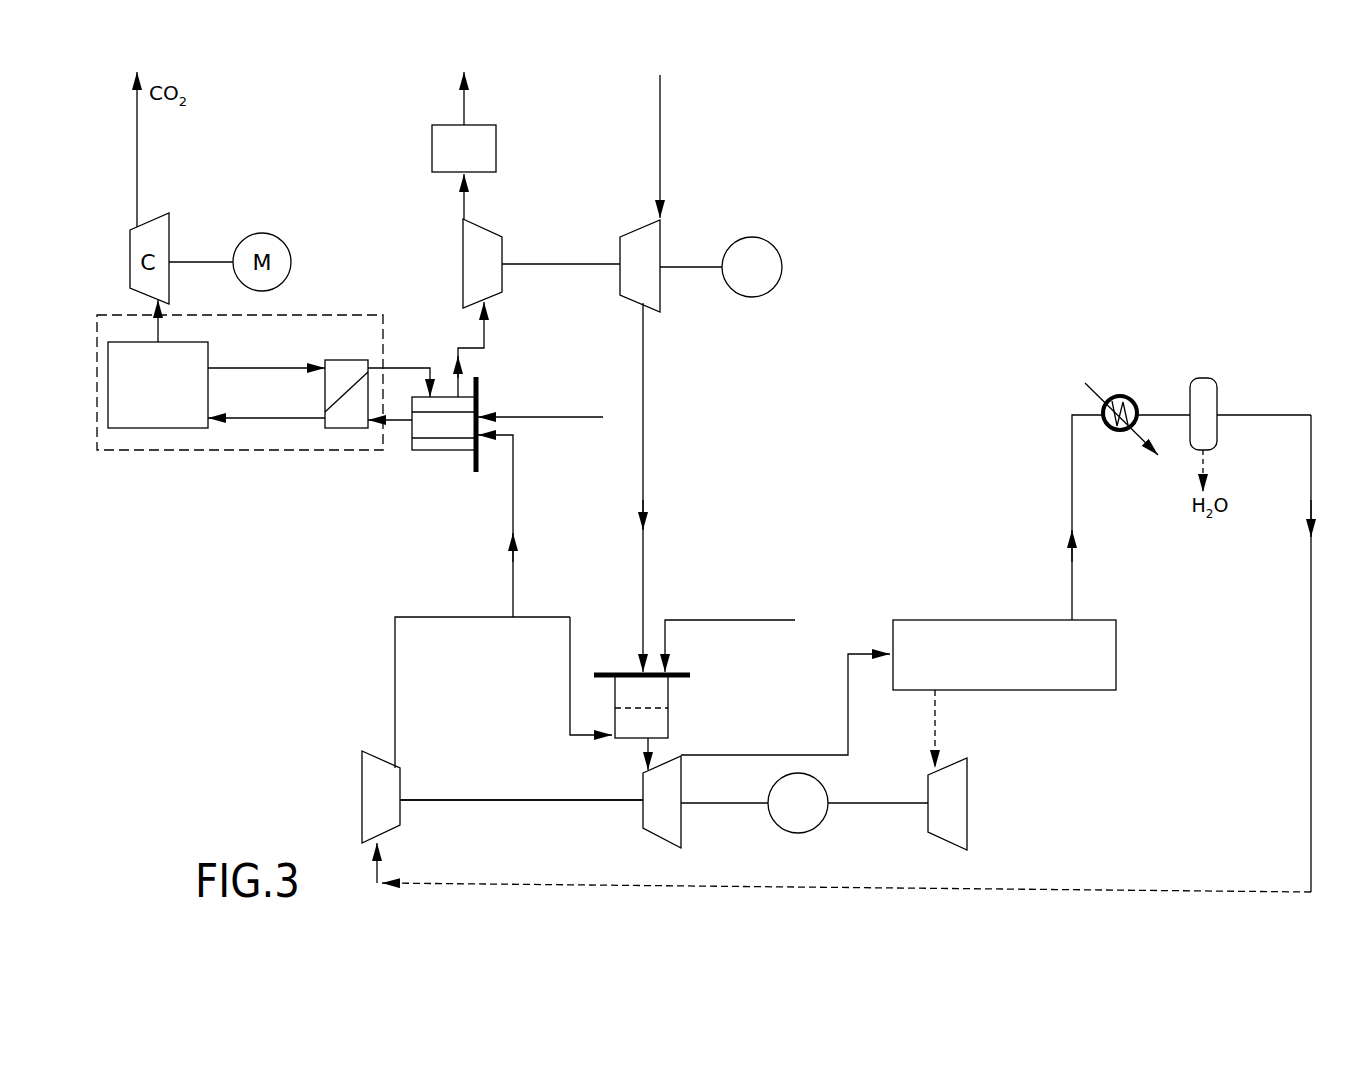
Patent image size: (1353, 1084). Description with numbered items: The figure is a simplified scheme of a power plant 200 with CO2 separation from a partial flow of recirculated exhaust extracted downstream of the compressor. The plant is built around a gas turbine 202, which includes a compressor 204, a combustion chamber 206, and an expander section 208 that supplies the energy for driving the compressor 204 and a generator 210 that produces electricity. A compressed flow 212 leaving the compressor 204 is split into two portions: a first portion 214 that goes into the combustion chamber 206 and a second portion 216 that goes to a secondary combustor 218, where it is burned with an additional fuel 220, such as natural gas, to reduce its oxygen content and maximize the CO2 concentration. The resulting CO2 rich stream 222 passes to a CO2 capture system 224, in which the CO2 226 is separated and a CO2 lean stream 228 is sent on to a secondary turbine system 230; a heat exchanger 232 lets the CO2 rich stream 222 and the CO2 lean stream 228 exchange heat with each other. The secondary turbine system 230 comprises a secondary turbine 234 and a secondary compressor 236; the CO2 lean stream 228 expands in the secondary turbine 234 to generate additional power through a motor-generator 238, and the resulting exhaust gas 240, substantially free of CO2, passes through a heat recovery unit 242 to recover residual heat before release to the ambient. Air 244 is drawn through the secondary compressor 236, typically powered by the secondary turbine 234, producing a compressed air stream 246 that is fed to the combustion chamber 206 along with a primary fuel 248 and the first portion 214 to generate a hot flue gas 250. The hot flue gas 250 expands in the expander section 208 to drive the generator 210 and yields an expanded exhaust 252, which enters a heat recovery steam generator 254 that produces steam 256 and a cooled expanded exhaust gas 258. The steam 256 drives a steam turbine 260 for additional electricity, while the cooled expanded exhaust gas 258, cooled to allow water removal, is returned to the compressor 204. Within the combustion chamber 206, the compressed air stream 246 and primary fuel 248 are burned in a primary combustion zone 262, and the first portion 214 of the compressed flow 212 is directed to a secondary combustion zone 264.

The power plant 200 is at (967, 275).
The gas turbine 202 is at (462, 867).
The compressor 204 is at (380, 772).
The combustion chamber 206 is at (636, 726).
The expander section 208 is at (683, 830).
The generator 210 is at (808, 832).
The compressed flow 212 is at (395, 656).
The first portion 214 is at (540, 620).
The second portion 216 is at (513, 567).
The secondary combustor 218 is at (445, 422).
The additional fuel 220 is at (551, 410).
The CO2 rich stream 222 is at (392, 432).
The CO2 capture system 224 is at (183, 452).
The CO2 226 is at (160, 340).
The CO2 lean stream 228 is at (408, 360).
The secondary turbine system 230 is at (553, 169).
The heat exchanger 232 is at (323, 388).
The secondary turbine 234 is at (485, 255).
The secondary compressor 236 is at (648, 250).
The motor-generator 238 is at (755, 252).
The exhaust gas 240 is at (466, 205).
The heat recovery unit 242 is at (470, 130).
The air 244 is at (662, 135).
The compressed air stream 246 is at (645, 432).
The primary fuel 248 is at (760, 620).
The hot flue gas 250 is at (653, 748).
The expanded exhaust 252 is at (848, 725).
The heat recovery steam generator 254 is at (1090, 660).
The steam 256 is at (937, 725).
The cooled expanded exhaust gas 258 is at (1070, 505).
The steam turbine 260 is at (960, 780).
The primary combustion zone 262 is at (655, 693).
The secondary combustion zone 264 is at (638, 736).